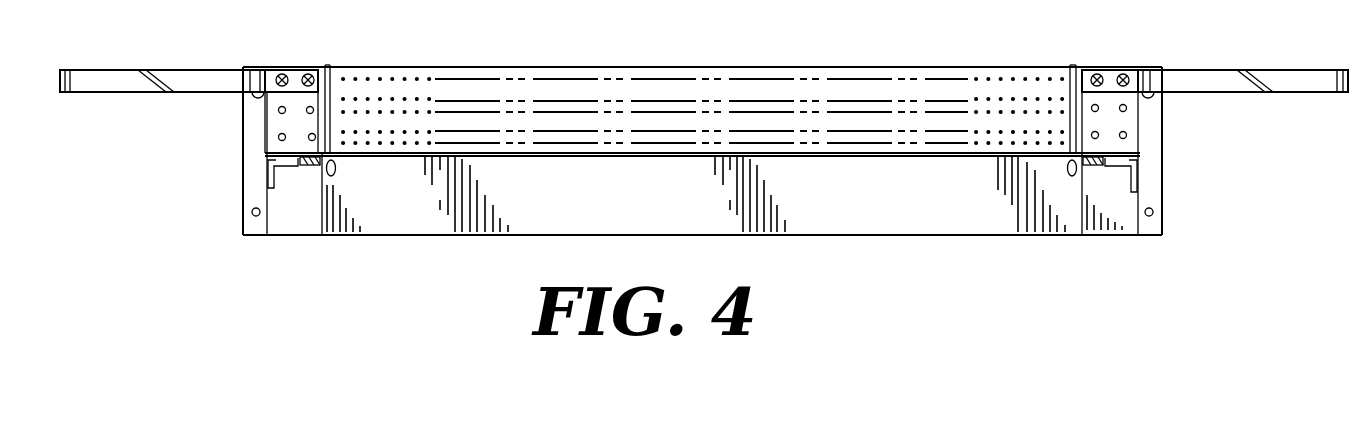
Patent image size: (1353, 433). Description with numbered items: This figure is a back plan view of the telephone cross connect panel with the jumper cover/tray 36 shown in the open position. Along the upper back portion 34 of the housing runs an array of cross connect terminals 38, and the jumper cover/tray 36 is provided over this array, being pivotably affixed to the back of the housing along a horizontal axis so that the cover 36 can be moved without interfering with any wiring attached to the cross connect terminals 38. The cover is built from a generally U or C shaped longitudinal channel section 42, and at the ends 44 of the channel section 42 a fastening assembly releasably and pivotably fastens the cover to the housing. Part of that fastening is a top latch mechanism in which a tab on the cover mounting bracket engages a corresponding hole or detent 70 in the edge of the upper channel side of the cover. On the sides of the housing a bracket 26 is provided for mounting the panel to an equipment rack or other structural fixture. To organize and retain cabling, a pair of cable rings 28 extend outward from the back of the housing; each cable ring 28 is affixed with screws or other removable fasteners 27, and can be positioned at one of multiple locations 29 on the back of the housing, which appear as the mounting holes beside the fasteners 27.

The bracket 26 is at (252, 200).
The removable fasteners 27 is at (309, 74).
The cable ring 28 is at (104, 82).
The locations 29 is at (278, 137).
The upper back portion 34 is at (686, 100).
The jumper cover/tray 36 is at (421, 217).
The cross connect terminals 38 is at (378, 98).
The channel section 42 is at (936, 229).
The ends 44 is at (304, 242).
The hole or detent 70 is at (336, 168).